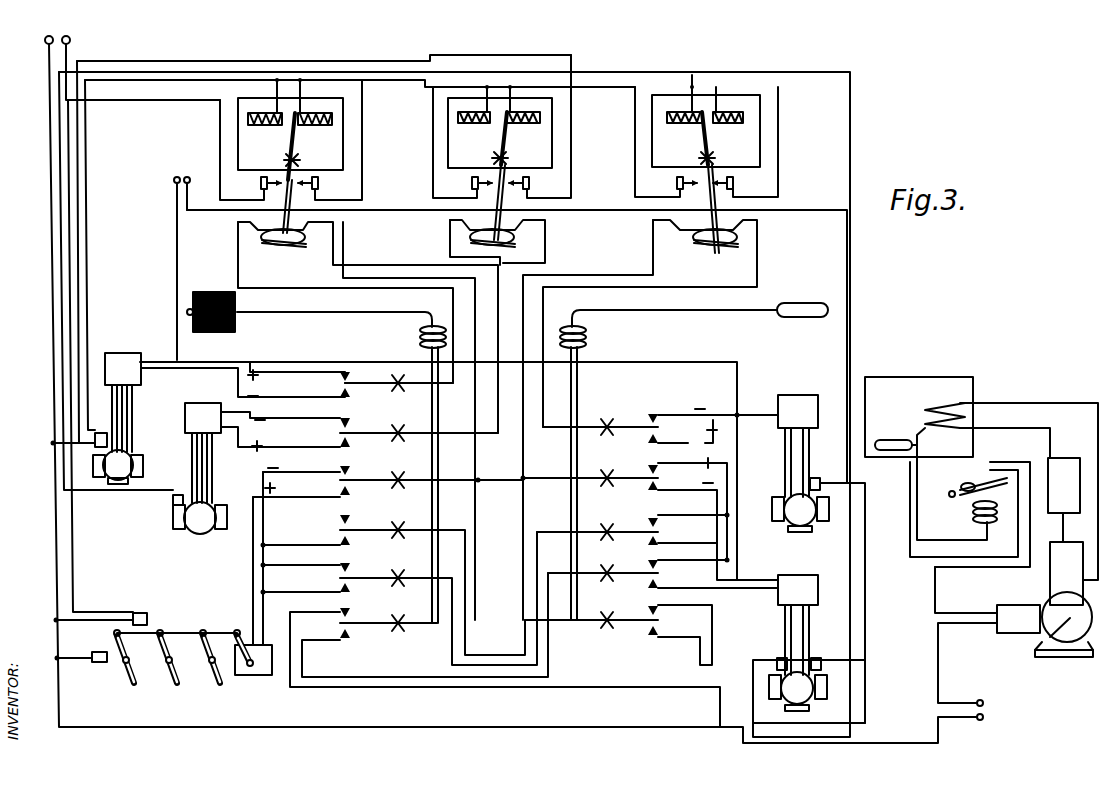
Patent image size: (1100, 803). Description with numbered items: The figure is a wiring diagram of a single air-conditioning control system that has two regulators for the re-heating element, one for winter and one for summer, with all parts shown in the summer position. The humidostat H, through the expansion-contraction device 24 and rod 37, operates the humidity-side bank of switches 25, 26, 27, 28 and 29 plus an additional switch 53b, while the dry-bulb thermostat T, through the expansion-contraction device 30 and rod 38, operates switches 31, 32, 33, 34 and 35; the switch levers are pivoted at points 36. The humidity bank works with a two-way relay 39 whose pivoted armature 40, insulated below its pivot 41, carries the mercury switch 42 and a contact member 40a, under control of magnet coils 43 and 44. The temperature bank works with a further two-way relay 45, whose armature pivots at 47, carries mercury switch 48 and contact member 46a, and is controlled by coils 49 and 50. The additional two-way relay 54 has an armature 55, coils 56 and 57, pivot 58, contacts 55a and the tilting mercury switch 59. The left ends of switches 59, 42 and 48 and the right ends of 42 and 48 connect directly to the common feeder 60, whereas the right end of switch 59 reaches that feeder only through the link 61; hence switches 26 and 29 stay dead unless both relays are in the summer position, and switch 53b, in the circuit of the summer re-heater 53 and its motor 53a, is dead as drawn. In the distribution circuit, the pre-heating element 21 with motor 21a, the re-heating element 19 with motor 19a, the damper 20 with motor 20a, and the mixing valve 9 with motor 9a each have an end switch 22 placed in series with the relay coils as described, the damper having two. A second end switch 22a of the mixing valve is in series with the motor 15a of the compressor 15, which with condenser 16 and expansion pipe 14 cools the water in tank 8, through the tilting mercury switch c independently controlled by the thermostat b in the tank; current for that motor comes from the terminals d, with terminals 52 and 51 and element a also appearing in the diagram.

The supply terminals 52 is at (70, 46).
The terminals 51 is at (184, 176).
The additional two-way relay 54 is at (238, 140).
The left hand coil 56 is at (262, 110).
The right hand coil 57 is at (312, 110).
The armature 55 is at (307, 173).
The pivot 58 is at (287, 158).
The contacts 55a is at (300, 176).
The tilting mercury switch 59 is at (283, 253).
The two-way relay 39 is at (448, 130).
The magnet coil 43 is at (470, 108).
The magnet coil 44 is at (528, 108).
The pivoted armature 40 is at (519, 176).
The pivot 41 is at (496, 156).
The contact member 40a is at (510, 178).
The mercury switch 42 is at (518, 245).
The two-way relay 45 is at (750, 145).
The magnet coil 49 is at (680, 108).
The magnet coil 50 is at (730, 108).
The pivot 47 is at (702, 156).
The contact member 46a is at (715, 175).
The mercury switch 48 is at (715, 255).
The common feeder 60 is at (517, 335).
The link 61 is at (497, 420).
The humidostat H is at (309, 299).
The thermostat T is at (701, 301).
The expansion-contraction device 24 is at (420, 337).
The expansion-contraction device 30 is at (586, 337).
The rod 37 is at (438, 425).
The rod 38 is at (570, 455).
The operating motor 53a is at (123, 353).
The summer re-heater 53 is at (135, 462).
The additional switch 53b is at (340, 384).
The motor 21a is at (205, 403).
The pre-heating element 21 is at (205, 535).
The end-switch 22 is at (101, 433).
The switch 25 is at (375, 432).
The switch 26 is at (388, 553).
The switch 27 is at (393, 583).
The switch 28 is at (399, 598).
The switch 29 is at (505, 650).
The pivot point 36 is at (404, 488).
The switch 31 is at (660, 425).
The switch 32 is at (650, 519).
The switch 33 is at (633, 528).
The switch 34 is at (663, 570).
The switch 35 is at (618, 632).
The motor 19a is at (798, 395).
The re-heating element 19 is at (805, 515).
The motor 9a is at (818, 580).
The mixing valve 9 is at (800, 688).
The second end switch 22a is at (780, 658).
The tank 8 is at (930, 375).
The thermostat b is at (890, 440).
The expansion pipe 14 is at (912, 450).
The tilting mercury switch c is at (955, 488).
The coil a is at (972, 515).
The condenser 16 is at (1066, 458).
The compressor 15 is at (1052, 580).
The motor 15a is at (1050, 637).
The terminals d is at (985, 705).
The damper 20 is at (175, 690).
The motor 20a is at (255, 676).